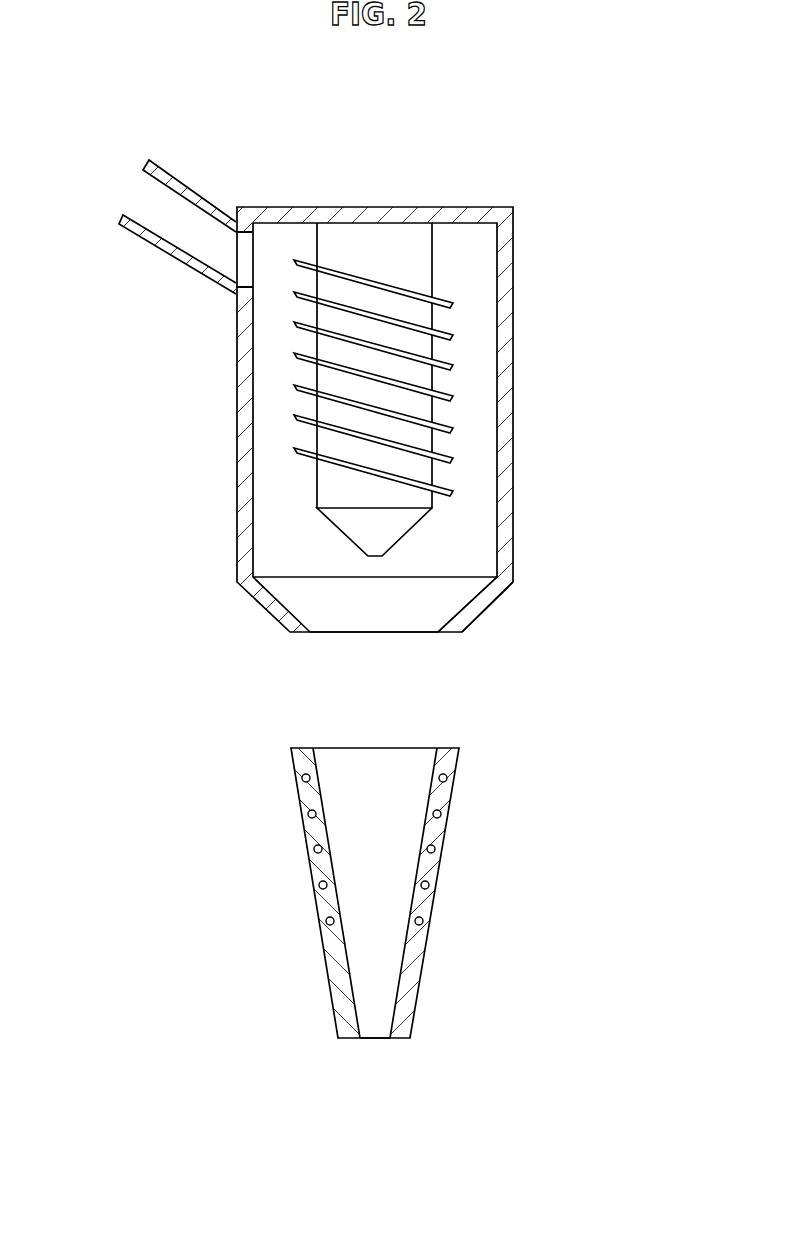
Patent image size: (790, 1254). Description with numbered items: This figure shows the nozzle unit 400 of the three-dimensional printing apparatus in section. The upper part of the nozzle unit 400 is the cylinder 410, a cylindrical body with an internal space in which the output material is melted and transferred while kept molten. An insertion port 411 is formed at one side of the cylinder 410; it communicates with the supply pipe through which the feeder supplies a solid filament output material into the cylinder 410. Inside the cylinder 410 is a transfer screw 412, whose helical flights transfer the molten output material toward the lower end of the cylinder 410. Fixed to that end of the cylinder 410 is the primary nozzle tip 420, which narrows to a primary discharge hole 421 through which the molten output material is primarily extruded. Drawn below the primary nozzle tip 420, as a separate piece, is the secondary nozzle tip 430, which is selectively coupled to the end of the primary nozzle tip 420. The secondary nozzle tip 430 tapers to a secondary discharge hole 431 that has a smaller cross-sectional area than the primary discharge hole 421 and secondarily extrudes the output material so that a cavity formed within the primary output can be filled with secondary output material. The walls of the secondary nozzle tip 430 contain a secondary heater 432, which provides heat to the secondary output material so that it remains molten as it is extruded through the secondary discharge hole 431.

The nozzle unit 400 is at (490, 112).
The cylinder 410 is at (505, 425).
The insertion port 411 is at (172, 228).
The transfer screw 412 is at (432, 262).
The primary nozzle tip 420 is at (482, 602).
The primary discharge hole 421 is at (345, 632).
The secondary nozzle tip 430 is at (417, 953).
The secondary discharge hole 431 is at (374, 1037).
The secondary heater 432 is at (441, 814).